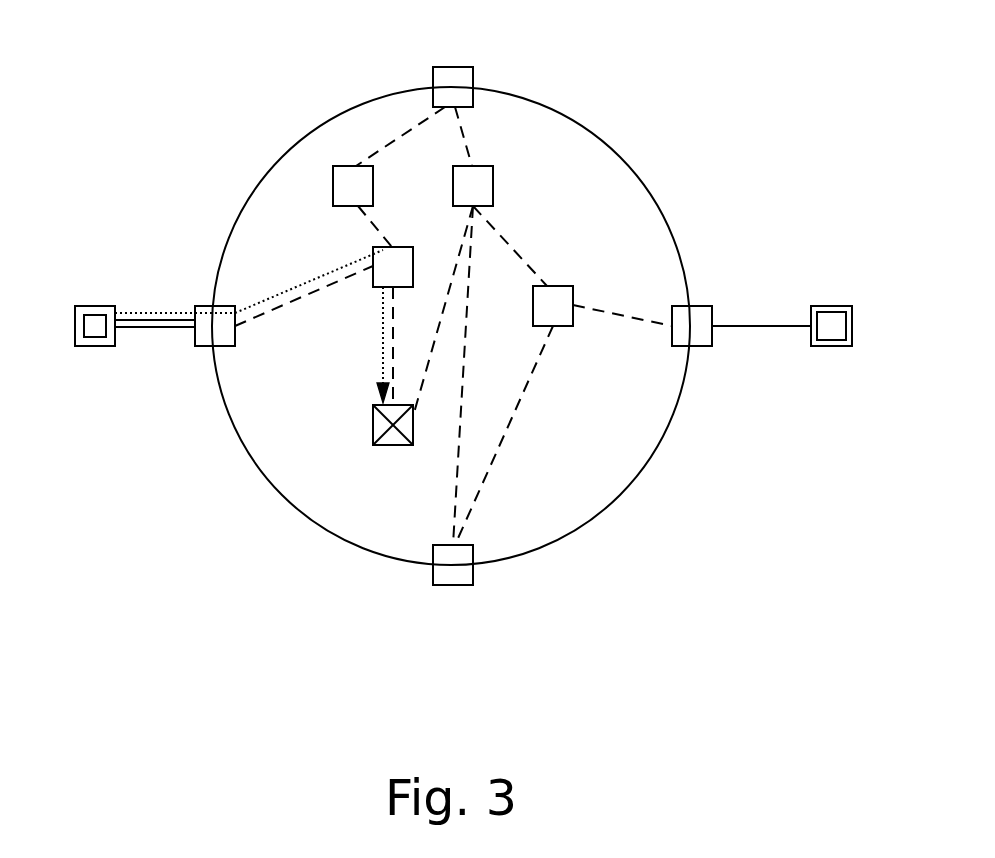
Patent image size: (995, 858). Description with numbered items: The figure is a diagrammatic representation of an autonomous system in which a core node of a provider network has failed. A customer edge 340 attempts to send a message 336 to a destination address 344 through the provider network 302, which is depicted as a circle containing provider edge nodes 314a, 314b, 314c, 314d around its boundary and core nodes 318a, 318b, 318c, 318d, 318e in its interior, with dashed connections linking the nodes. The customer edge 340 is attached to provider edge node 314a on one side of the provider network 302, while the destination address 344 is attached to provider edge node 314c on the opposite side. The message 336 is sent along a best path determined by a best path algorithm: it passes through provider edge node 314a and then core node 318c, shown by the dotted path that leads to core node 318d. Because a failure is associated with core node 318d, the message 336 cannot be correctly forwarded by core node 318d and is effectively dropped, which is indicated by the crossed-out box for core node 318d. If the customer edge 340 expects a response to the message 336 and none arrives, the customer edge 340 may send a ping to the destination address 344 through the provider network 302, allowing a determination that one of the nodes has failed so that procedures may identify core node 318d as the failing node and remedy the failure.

The provider network 302 is at (770, 81).
The provider edge node 314a is at (195, 342).
The provider edge node 314b is at (453, 67).
The provider edge node 314c is at (692, 306).
The provider edge node 314d is at (462, 585).
The core node 318a is at (343, 206).
The core node 318b is at (477, 166).
The core node 318c is at (380, 287).
The core node 318d is at (393, 445).
The core node 318e is at (553, 286).
The message 336 is at (175, 312).
The customer edge 340 is at (95, 346).
The destination address 344 is at (831, 306).